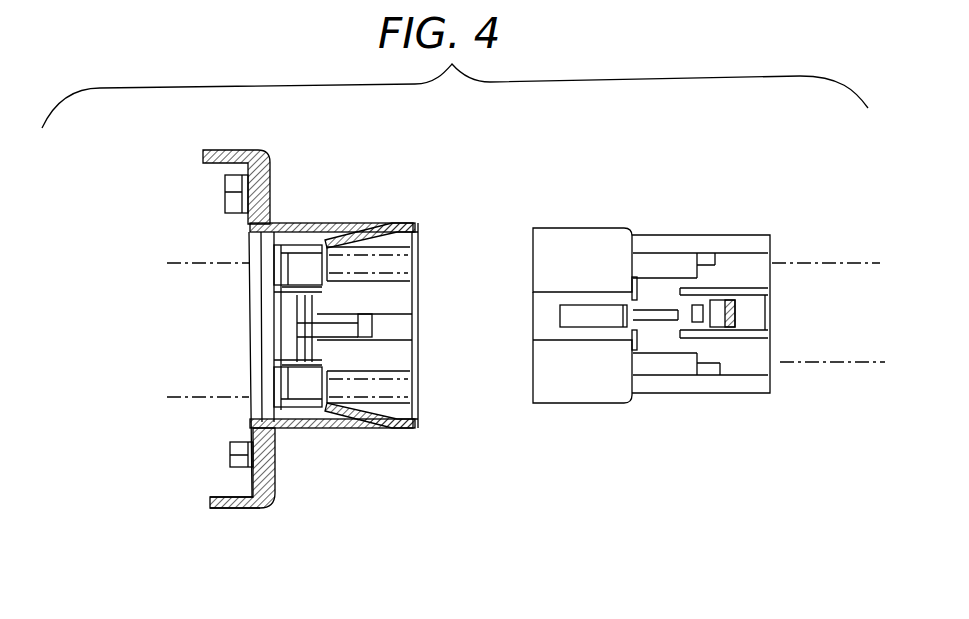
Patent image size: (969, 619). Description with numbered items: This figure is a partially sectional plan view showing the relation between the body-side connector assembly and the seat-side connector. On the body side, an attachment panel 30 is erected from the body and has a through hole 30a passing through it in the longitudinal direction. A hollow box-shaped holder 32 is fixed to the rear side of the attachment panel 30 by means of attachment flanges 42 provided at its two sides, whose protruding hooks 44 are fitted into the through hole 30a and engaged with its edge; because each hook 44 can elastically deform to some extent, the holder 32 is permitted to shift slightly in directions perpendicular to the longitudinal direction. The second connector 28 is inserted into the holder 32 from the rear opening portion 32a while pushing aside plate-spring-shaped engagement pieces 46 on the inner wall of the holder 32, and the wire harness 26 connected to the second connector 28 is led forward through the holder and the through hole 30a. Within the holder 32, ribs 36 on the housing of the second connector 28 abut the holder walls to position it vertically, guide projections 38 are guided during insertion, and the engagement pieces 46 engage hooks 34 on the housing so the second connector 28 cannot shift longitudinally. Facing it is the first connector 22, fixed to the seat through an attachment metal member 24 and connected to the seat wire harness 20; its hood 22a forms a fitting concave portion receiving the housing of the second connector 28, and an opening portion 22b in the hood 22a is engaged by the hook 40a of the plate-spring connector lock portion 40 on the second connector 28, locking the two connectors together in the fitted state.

The wire harness 20 is at (808, 242).
The first connector 22 is at (685, 231).
The hood 22a is at (580, 240).
The opening portion 22b is at (590, 318).
The attachment metal member 24 is at (738, 313).
The wire harness 26 is at (186, 263).
The second connector 28 is at (403, 358).
The attachment panel 30 is at (234, 514).
The through hole 30a is at (257, 248).
The holder 32 is at (419, 221).
The opening portion 32a is at (420, 243).
The hooks 34 is at (307, 232).
The ribs 36 is at (290, 247).
The guide projections 38 is at (275, 287).
The connector lock portion 40 is at (275, 328).
The hook 40a is at (373, 326).
The attachment flanges 42 is at (268, 168).
The hooks 44 is at (228, 204).
The engagement pieces 46 is at (364, 238).